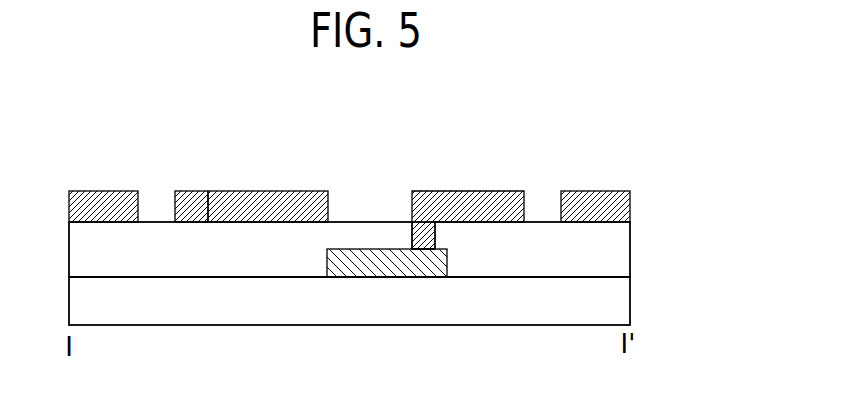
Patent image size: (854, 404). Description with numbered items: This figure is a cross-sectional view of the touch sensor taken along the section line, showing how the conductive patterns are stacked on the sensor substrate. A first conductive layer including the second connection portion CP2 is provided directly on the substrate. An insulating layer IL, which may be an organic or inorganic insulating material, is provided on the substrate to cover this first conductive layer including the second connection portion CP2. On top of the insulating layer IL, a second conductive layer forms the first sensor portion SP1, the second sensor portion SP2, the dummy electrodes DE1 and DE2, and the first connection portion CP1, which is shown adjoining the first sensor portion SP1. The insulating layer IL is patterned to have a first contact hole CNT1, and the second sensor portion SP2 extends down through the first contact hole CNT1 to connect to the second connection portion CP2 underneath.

The dummy electrode DE1 is at (108, 191).
The first sensor portion SP1 is at (192, 191).
The first connection portion CP1 is at (274, 191).
The first contact hole CNT1 is at (408, 236).
The second sensor portion SP2 is at (489, 191).
The dummy electrode DE2 is at (607, 191).
The second connection portion CP2 is at (447, 262).
The insulating layer IL is at (630, 252).